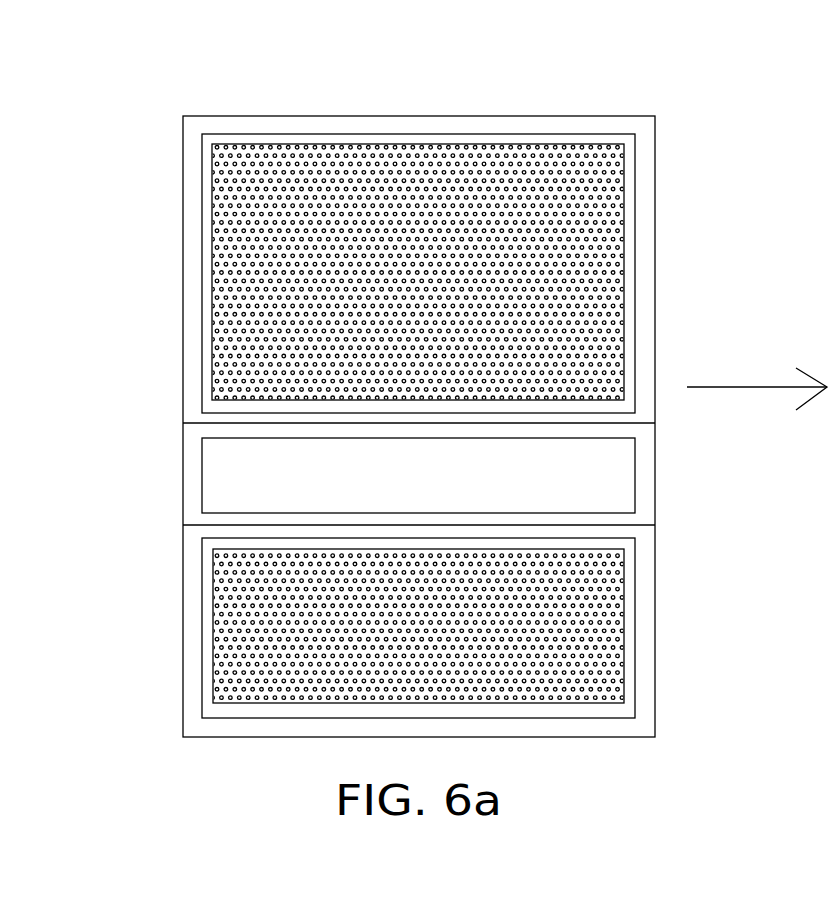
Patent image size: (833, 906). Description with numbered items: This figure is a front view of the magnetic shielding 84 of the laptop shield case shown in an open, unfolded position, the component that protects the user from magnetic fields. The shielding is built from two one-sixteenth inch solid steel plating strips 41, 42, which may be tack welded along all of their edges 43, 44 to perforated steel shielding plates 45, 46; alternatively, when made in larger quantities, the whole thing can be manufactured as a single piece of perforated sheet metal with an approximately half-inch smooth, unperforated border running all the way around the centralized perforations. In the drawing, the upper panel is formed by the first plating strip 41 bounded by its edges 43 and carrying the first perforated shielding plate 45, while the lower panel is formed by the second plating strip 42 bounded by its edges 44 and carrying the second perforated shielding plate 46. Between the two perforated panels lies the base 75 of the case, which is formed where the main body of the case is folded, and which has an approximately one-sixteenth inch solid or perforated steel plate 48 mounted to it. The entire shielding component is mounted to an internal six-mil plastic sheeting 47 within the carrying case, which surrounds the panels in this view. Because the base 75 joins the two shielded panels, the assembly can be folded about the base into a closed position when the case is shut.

The magnetic shielding 84 is at (422, 108).
The plastic sheeting 47 is at (193, 190).
The perforated steel shielding plate 45 is at (613, 208).
The solid steel plating strip 41 is at (628, 263).
The edge 43 is at (625, 331).
The steel plate 48 is at (618, 483).
The base 75 is at (217, 498).
The edge 44 is at (622, 585).
The solid steel plating strip 42 is at (629, 617).
The perforated steel shielding plate 46 is at (615, 647).